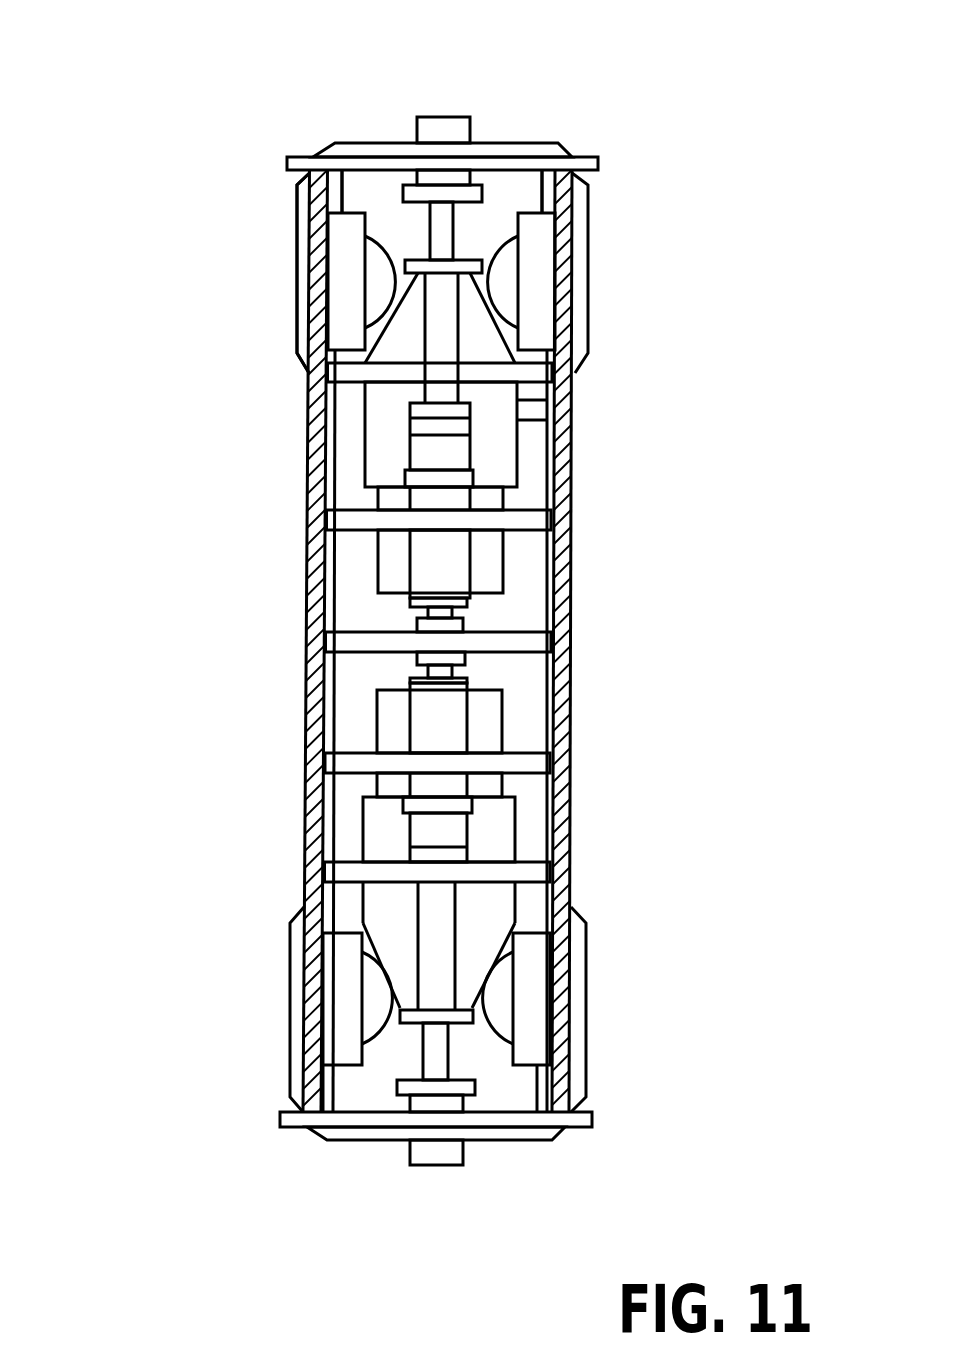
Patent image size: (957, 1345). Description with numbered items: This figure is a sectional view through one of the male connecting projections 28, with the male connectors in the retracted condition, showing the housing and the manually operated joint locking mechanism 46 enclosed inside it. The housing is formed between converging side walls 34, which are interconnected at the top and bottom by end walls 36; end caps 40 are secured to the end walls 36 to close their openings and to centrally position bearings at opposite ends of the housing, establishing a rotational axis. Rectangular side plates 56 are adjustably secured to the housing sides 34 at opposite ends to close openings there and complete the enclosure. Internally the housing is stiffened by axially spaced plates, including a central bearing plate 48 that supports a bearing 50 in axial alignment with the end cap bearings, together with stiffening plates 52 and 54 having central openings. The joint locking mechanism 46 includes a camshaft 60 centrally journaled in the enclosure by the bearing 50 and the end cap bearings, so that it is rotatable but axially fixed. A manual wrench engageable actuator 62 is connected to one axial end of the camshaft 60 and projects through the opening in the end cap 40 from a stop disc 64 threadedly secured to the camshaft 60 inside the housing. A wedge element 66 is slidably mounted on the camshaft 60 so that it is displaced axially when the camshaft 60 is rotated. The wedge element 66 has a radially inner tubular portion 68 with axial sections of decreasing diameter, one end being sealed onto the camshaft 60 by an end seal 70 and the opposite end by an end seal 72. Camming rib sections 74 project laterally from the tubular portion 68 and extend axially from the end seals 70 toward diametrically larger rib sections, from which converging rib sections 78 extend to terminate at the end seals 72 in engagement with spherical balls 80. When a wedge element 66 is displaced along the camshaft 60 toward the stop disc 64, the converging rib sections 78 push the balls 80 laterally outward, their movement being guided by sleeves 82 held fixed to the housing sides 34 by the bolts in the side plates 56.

The male connecting projection 28 is at (268, 161).
The converging side walls 34 is at (315, 730).
The end walls 36 is at (593, 165).
The end caps 40 is at (367, 147).
The joint locking mechanism 46 is at (514, 185).
The central bearing plate 48 is at (520, 630).
The bearing 50 is at (425, 627).
The stiffening plate 52 is at (358, 532).
The stiffening plate 54 is at (527, 385).
The rectangular side plates 56 is at (297, 247).
The camshaft 60 is at (443, 673).
The manual wrench engageable actuator 62 is at (452, 127).
The stop disc 64 is at (473, 197).
The wedge element 66 is at (372, 424).
The radially inner tubular portion 68 is at (450, 562).
The end seal 70 is at (460, 600).
The end seal 72 is at (415, 265).
The camming rib sections 74 is at (383, 573).
The converging rib section 78 is at (403, 345).
The spherical balls 80 is at (507, 285).
The sleeves 82 is at (537, 243).